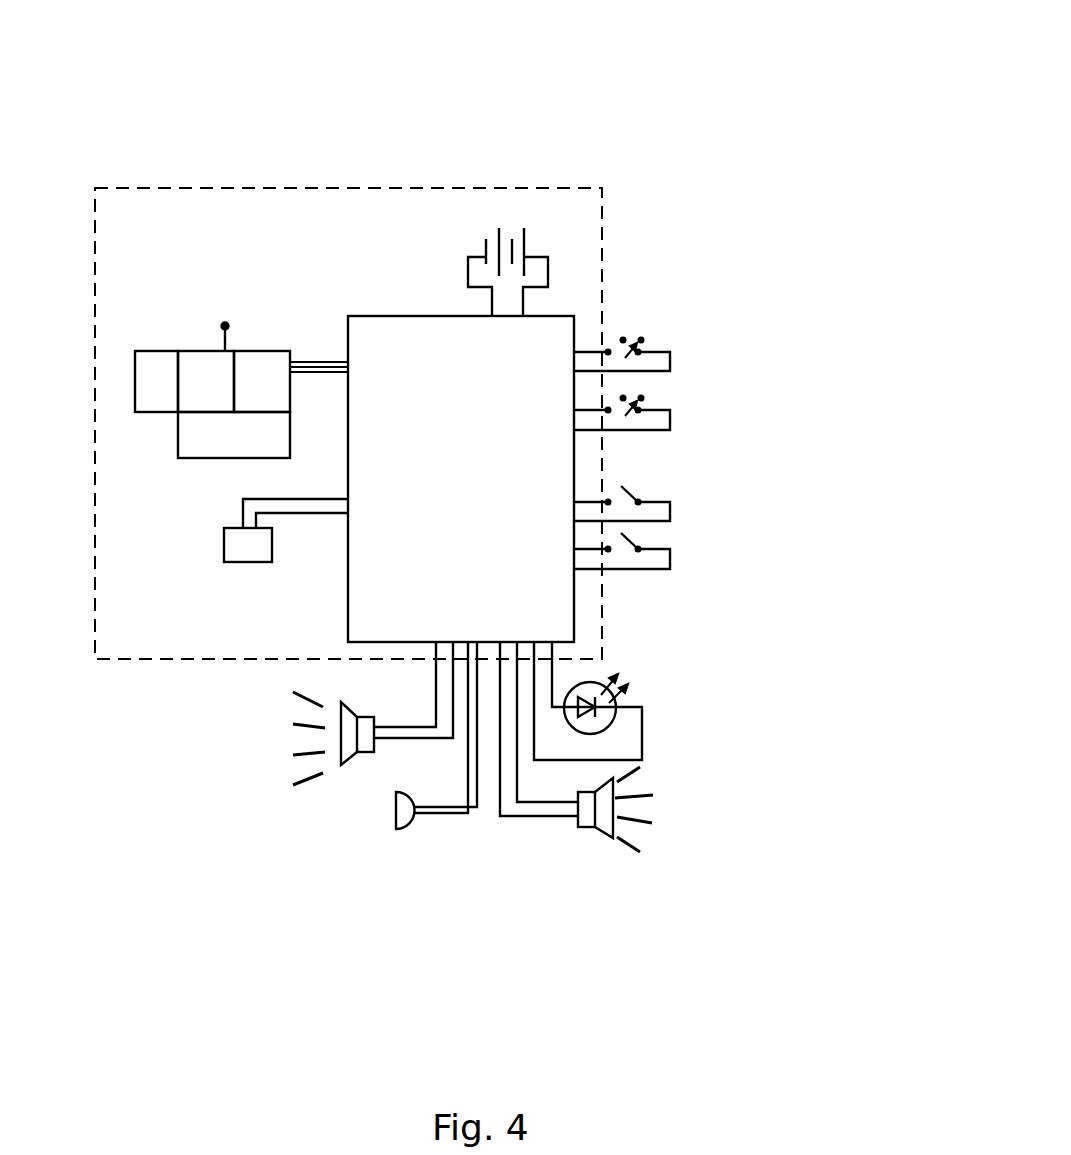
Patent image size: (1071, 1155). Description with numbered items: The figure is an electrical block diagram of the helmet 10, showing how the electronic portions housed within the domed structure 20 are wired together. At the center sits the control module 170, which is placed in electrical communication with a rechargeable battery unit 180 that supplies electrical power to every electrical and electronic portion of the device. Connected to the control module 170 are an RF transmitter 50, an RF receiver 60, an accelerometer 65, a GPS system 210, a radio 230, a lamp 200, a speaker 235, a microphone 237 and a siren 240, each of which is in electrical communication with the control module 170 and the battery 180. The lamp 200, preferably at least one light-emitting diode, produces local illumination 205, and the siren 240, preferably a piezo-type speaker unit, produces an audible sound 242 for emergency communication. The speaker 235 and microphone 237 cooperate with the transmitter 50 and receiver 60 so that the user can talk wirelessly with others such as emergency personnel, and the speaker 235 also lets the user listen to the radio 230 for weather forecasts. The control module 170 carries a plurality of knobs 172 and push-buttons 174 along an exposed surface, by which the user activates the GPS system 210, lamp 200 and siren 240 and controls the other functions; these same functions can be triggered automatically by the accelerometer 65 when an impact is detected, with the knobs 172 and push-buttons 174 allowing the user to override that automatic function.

The helmet 10 is at (722, 144).
The domed structure 20 is at (483, 188).
The RF transmitter 50 is at (252, 363).
The RF receiver 60 is at (190, 363).
The accelerometer 65 is at (248, 545).
The control module 170 is at (378, 316).
The knob 172 is at (645, 408).
The push-button 174 is at (640, 540).
The rechargeable battery unit 180 is at (511, 228).
The lamp 200 is at (628, 700).
The local illumination 205 is at (623, 690).
The GPS system 210 is at (209, 443).
The radio 230 is at (151, 362).
The speaker 235 is at (342, 742).
The microphone 237 is at (393, 826).
The siren 240 is at (640, 790).
The audible sound 242 is at (308, 728).